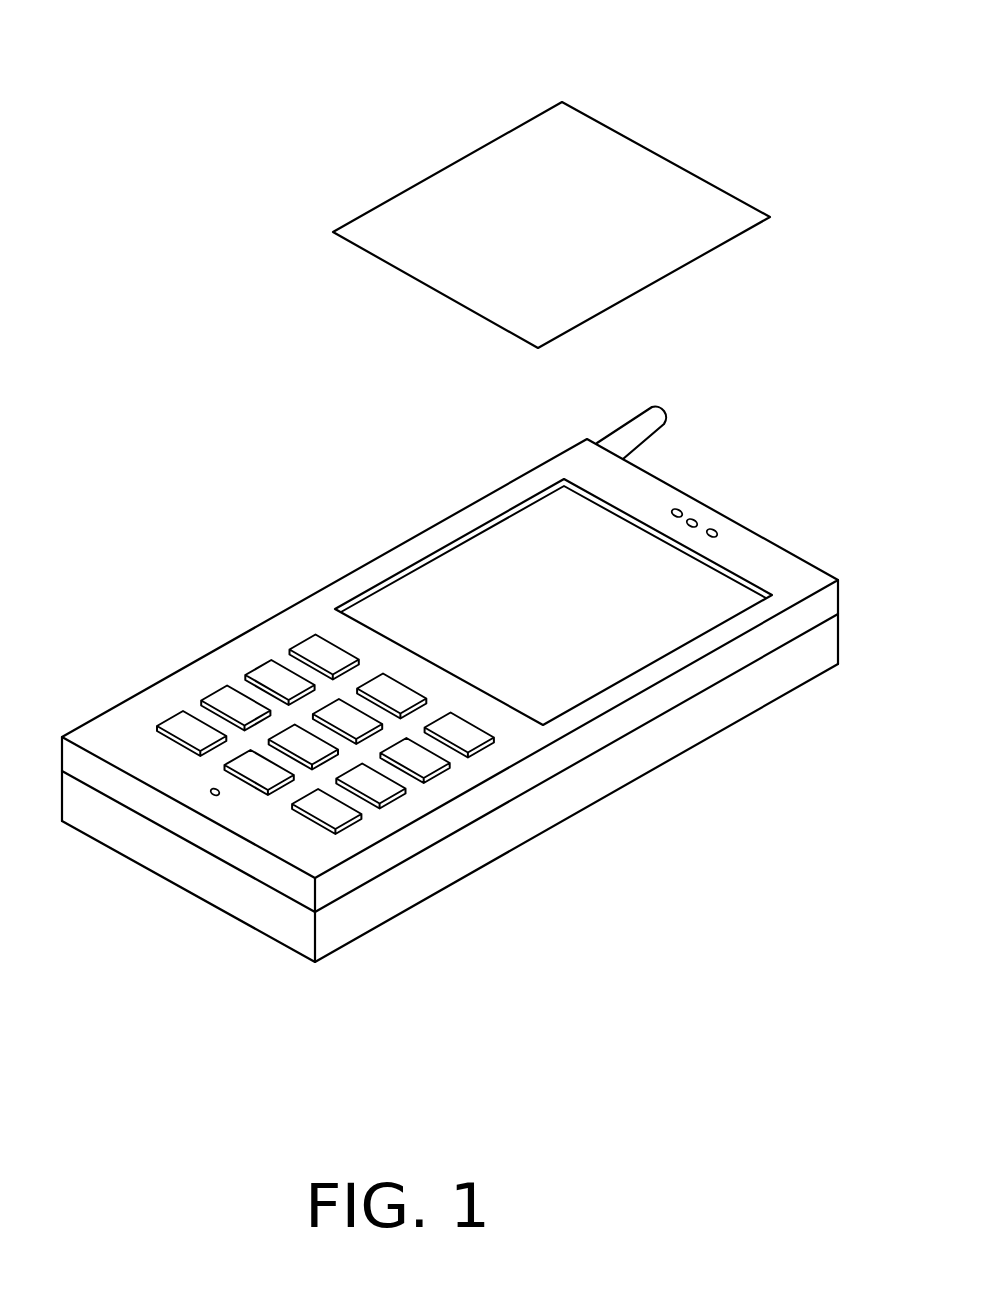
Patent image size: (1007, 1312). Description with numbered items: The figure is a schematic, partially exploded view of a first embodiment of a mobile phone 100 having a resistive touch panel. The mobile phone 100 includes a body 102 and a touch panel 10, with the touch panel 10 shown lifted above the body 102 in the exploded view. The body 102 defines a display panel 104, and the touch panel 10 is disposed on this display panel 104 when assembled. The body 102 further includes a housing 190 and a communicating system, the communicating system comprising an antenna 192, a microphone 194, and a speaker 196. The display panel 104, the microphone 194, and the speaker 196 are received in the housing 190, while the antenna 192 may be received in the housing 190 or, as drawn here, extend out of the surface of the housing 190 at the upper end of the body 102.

The mobile phone 100 is at (445, 39).
The touch panel 10 is at (622, 196).
The body 102 is at (698, 790).
The display panel 104 is at (480, 573).
The housing 190 is at (243, 857).
The antenna 192 is at (637, 425).
The microphone 194 is at (208, 792).
The speaker 196 is at (693, 520).